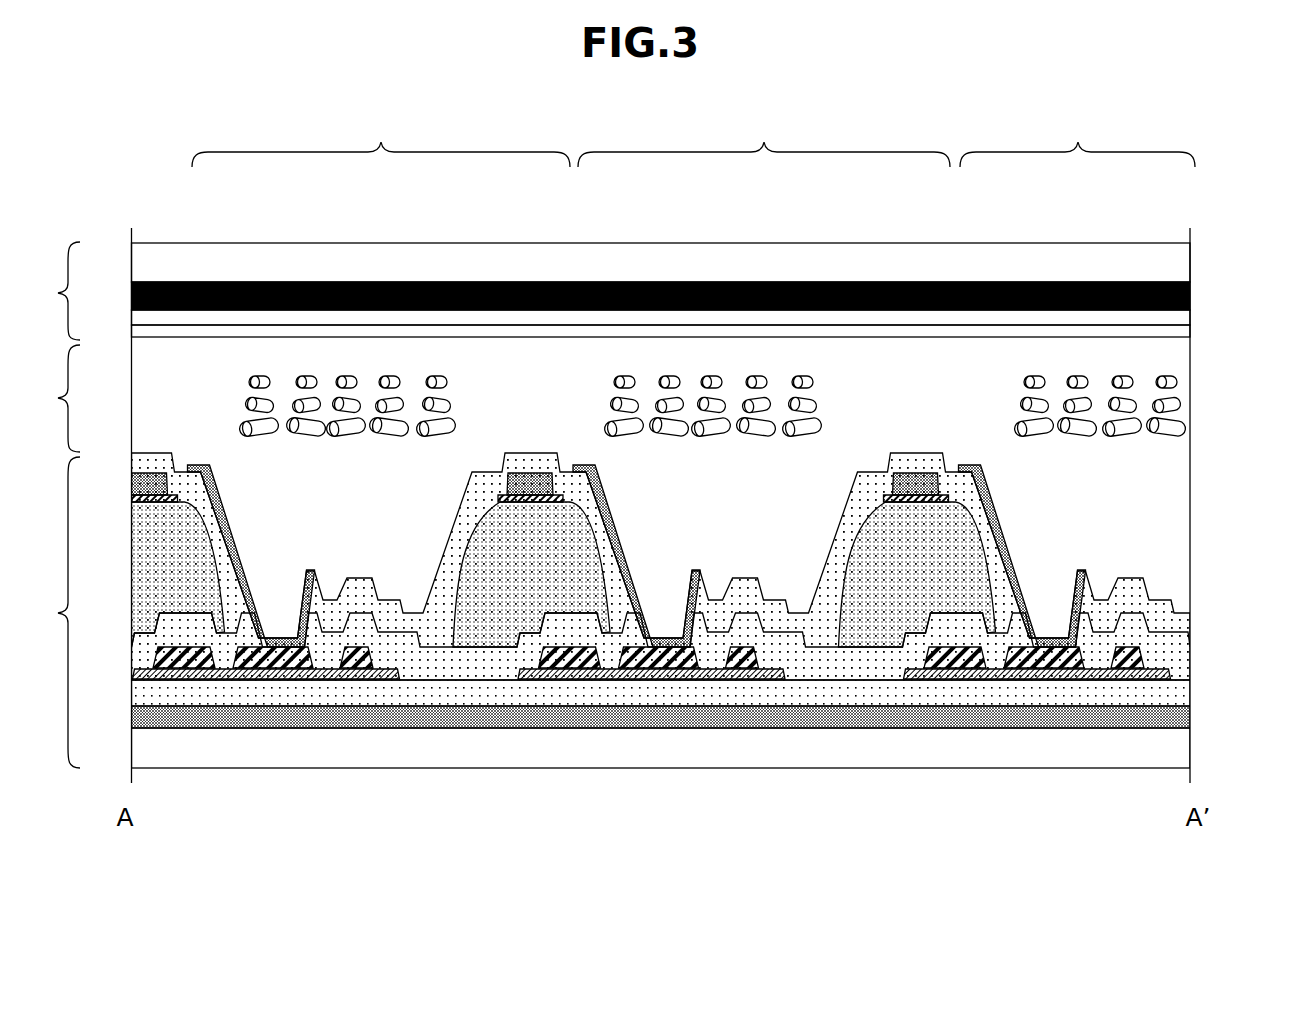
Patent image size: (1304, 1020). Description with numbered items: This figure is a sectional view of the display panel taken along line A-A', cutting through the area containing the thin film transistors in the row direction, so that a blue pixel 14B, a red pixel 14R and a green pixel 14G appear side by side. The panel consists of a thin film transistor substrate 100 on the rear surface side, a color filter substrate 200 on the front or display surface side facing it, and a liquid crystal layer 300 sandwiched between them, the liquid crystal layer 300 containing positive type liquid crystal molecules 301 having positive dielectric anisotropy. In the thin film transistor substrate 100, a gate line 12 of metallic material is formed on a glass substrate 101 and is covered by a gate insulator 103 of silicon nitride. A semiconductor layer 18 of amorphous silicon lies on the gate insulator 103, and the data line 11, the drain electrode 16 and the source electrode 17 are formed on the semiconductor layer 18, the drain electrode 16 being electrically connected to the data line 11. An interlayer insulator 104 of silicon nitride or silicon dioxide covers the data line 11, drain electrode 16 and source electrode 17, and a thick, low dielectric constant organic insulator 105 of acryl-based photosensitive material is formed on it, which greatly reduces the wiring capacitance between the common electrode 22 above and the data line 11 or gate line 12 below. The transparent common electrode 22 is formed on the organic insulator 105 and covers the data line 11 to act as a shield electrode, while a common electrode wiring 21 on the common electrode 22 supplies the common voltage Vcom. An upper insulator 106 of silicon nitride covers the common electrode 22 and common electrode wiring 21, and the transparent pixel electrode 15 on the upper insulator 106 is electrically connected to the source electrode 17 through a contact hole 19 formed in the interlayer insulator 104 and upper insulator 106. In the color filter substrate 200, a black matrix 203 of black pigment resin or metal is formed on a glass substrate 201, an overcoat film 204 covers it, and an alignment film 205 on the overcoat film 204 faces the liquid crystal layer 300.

The blue pixel 14B is at (381, 136).
The red pixel 14R is at (764, 136).
The green pixel 14G is at (1077, 136).
The color filter substrate 200 is at (40, 291).
The glass substrate 201 is at (1182, 266).
The black matrix 203 is at (1182, 294).
The overcoat film 204 is at (1182, 318).
The alignment film 205 is at (1182, 339).
The liquid crystal layer 300 is at (40, 398).
The liquid crystal molecules 301 is at (818, 401).
The thin film transistor substrate 100 is at (40, 612).
The glass substrate 101 is at (1182, 751).
The gate line 12 is at (1182, 719).
The gate insulator 103 is at (1182, 691).
The interlayer insulator 104 is at (1182, 657).
The organic insulator 105 is at (480, 556).
The upper insulator 106 is at (1182, 629).
The pixel electrode 15 is at (221, 493).
The contact hole 19 is at (287, 591).
The common electrode wiring 21 is at (530, 473).
The common electrode 22 is at (500, 498).
The data line 11 is at (163, 680).
The drain electrode 16 is at (358, 680).
The source electrode 17 is at (283, 680).
The semiconductor layer 18 is at (232, 680).